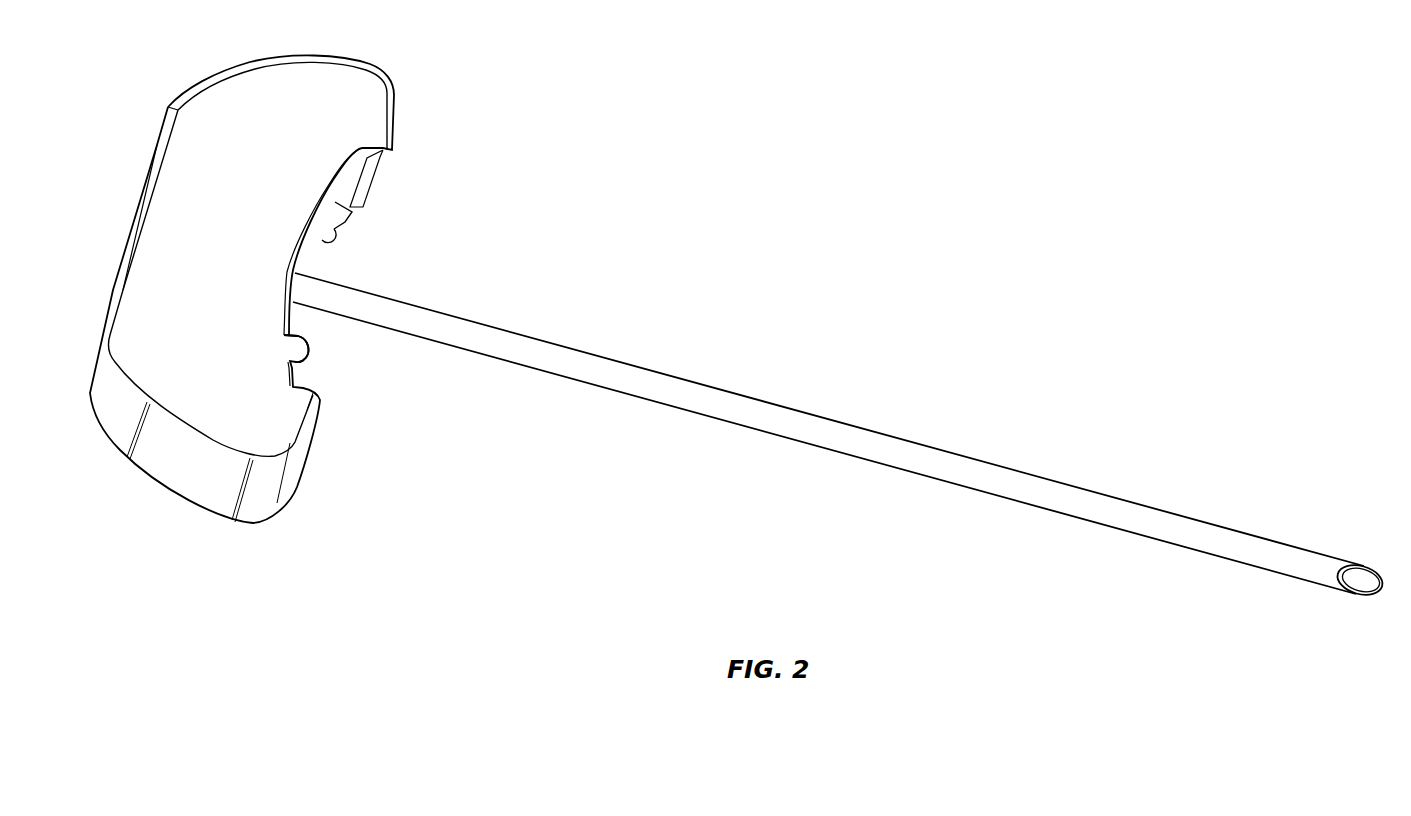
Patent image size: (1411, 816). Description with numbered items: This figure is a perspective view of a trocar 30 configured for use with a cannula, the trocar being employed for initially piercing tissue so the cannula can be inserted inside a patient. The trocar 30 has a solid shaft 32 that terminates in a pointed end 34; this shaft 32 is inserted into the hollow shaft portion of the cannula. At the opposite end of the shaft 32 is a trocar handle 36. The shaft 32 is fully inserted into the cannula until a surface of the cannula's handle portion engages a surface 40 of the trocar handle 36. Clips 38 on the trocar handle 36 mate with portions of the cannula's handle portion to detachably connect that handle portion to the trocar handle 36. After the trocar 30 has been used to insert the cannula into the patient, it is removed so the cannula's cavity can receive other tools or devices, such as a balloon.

The trocar 30 is at (560, 410).
The solid shaft 32 is at (997, 477).
The pointed end 34 is at (1355, 582).
The trocar handle 36 is at (382, 104).
The clips 38 is at (331, 232).
The surface 40 is at (337, 203).